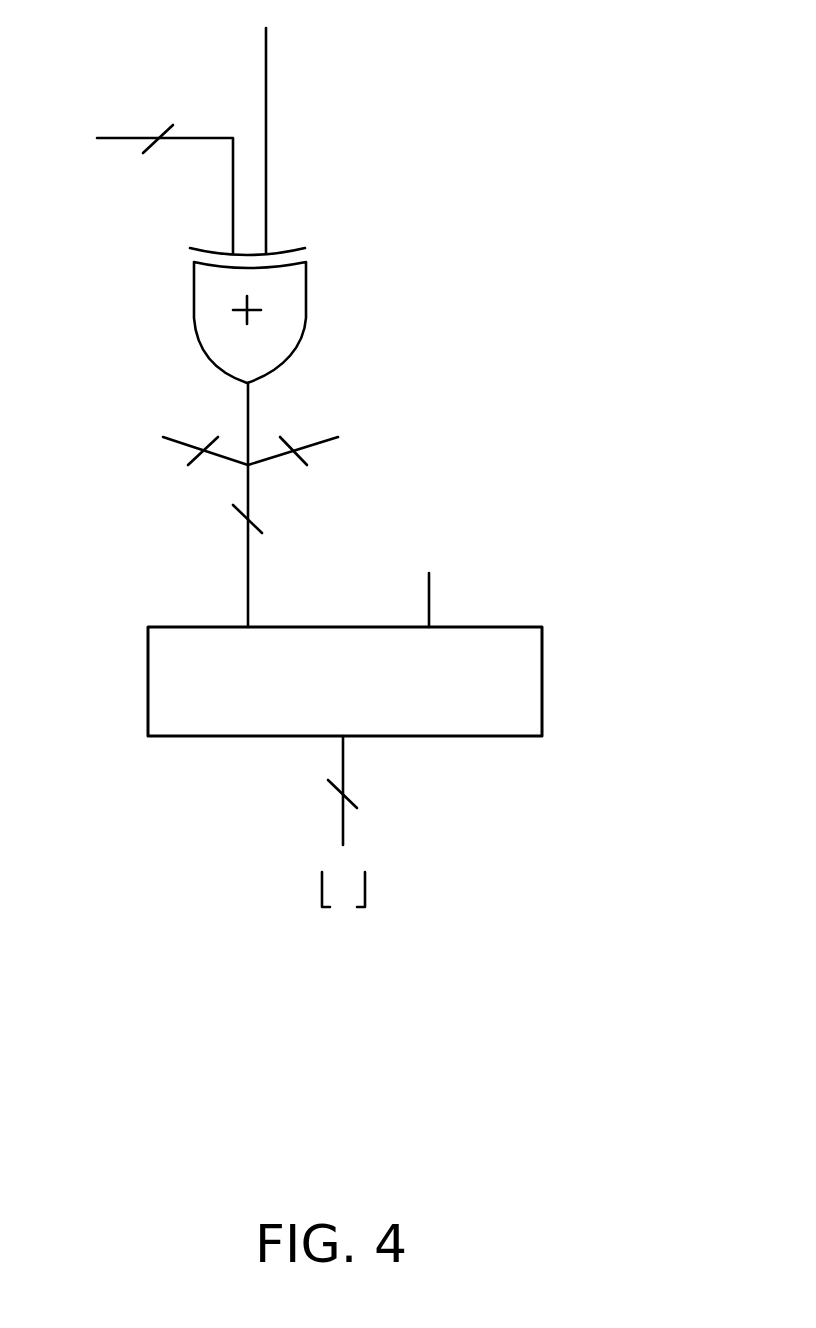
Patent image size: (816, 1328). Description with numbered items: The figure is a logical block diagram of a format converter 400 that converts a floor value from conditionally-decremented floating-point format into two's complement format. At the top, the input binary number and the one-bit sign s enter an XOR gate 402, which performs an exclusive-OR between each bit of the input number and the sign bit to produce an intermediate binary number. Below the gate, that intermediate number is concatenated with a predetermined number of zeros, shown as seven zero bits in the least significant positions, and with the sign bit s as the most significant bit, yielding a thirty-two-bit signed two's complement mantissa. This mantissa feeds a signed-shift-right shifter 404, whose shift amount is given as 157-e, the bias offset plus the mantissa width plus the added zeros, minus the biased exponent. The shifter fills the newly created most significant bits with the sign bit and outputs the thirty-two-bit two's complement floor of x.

The format converter 400 is at (538, 165).
The XOR gate 402 is at (193, 315).
The signed-shift-right shifter 404 is at (542, 682).
The shift amount 157-e is at (427, 578).